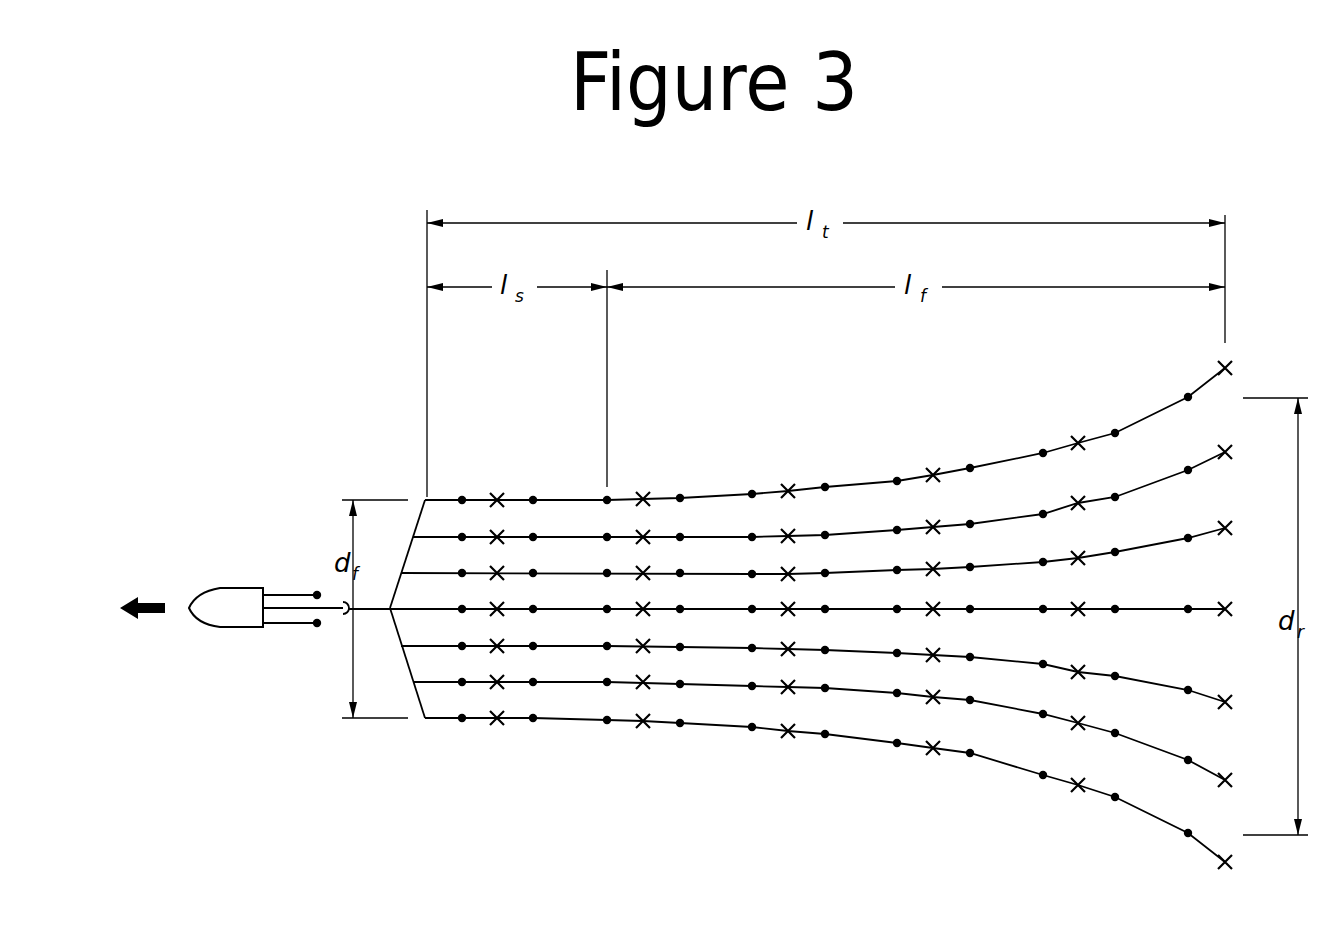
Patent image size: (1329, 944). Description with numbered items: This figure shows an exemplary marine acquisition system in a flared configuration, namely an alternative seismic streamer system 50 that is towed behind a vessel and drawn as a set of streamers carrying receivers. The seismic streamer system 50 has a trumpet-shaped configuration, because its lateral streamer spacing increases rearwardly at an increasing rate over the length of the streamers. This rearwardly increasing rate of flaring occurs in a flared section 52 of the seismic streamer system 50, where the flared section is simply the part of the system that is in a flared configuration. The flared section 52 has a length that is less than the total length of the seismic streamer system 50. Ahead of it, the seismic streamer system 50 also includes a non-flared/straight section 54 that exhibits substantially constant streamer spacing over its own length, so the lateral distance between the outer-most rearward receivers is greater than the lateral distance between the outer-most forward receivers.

The seismic streamer system 50 is at (597, 775).
The flared section 52 is at (915, 426).
The non-flared/straight section 54 is at (537, 440).